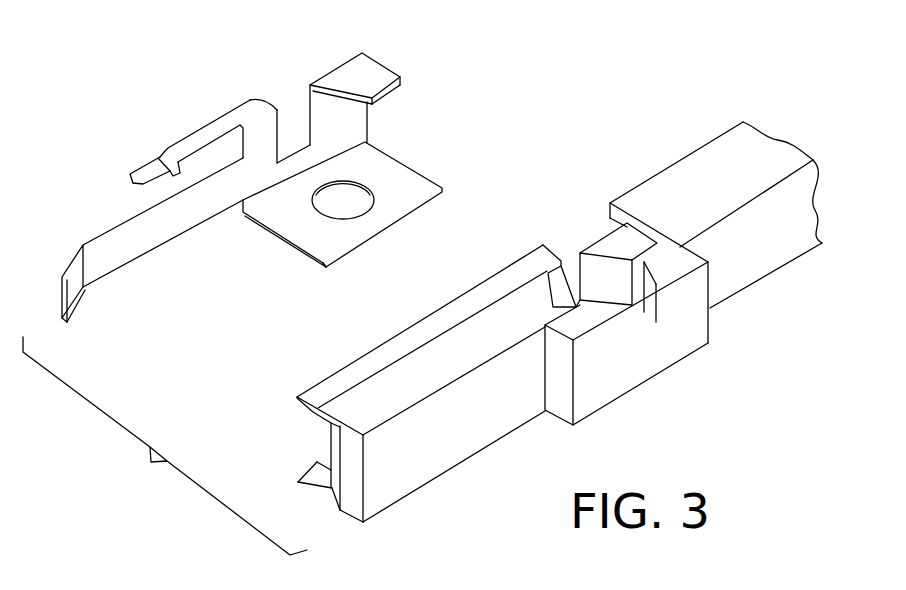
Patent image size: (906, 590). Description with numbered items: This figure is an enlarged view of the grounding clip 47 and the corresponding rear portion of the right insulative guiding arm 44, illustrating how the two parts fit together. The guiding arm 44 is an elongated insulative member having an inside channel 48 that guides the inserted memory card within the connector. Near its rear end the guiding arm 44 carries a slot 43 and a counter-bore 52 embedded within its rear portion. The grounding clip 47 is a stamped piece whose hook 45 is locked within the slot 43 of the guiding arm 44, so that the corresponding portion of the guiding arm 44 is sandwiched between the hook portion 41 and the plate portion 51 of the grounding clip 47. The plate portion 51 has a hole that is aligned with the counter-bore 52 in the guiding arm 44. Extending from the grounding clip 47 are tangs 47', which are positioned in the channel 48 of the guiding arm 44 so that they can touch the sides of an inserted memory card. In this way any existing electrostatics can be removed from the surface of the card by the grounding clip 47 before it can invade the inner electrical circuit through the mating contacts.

The hook portion 41 is at (279, 184).
The hook 45 is at (383, 82).
The grounding clip 47 is at (166, 193).
The tangs 47' is at (121, 232).
The plate portion 51 is at (413, 190).
The counter-bore 52 is at (593, 307).
The slot 43 is at (645, 300).
The right insulative guiding arm 44 is at (411, 383).
The inside channel 48 is at (320, 470).